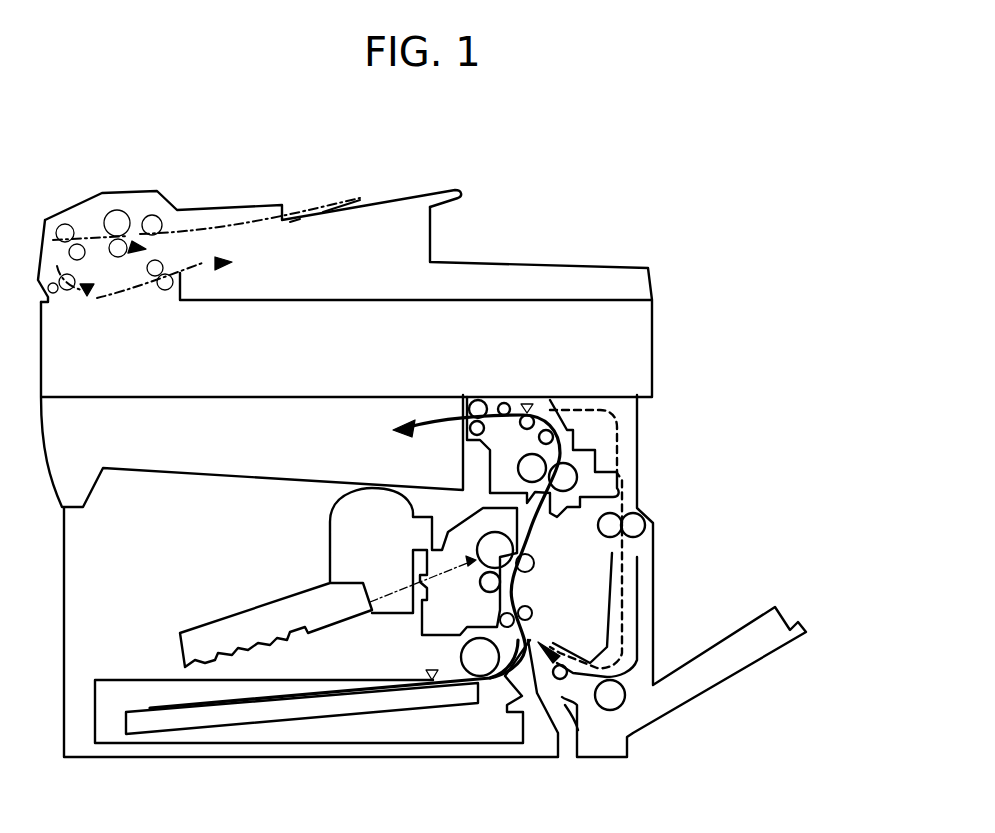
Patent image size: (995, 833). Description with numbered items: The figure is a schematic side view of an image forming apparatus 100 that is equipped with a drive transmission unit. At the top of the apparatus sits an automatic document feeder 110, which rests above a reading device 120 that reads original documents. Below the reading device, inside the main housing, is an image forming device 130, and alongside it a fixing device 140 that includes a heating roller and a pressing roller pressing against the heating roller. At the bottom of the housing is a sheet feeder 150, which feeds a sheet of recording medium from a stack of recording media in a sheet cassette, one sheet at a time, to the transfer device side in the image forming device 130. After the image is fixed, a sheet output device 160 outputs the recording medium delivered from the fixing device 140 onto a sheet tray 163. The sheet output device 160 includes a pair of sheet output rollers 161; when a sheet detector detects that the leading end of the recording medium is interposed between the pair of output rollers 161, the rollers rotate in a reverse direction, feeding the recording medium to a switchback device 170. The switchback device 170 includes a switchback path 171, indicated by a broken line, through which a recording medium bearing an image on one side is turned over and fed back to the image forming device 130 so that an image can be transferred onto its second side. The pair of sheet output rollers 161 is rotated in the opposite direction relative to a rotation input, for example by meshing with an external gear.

The image forming apparatus 100 is at (606, 181).
The automatic document feeder 110 is at (408, 195).
The reading device 120 is at (653, 340).
The image forming device 130 is at (312, 533).
The fixing device 140 is at (573, 495).
The sheet feeder 150 is at (493, 683).
The sheet output device 160 is at (560, 422).
The pair of sheet output rollers 161 is at (463, 427).
The sheet tray 163 is at (243, 463).
The switchback device 170 is at (631, 550).
The switchback path 171 is at (622, 593).